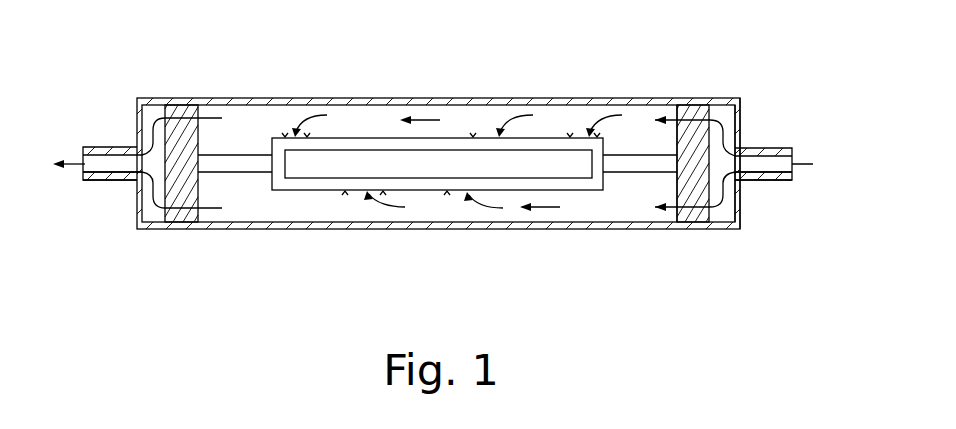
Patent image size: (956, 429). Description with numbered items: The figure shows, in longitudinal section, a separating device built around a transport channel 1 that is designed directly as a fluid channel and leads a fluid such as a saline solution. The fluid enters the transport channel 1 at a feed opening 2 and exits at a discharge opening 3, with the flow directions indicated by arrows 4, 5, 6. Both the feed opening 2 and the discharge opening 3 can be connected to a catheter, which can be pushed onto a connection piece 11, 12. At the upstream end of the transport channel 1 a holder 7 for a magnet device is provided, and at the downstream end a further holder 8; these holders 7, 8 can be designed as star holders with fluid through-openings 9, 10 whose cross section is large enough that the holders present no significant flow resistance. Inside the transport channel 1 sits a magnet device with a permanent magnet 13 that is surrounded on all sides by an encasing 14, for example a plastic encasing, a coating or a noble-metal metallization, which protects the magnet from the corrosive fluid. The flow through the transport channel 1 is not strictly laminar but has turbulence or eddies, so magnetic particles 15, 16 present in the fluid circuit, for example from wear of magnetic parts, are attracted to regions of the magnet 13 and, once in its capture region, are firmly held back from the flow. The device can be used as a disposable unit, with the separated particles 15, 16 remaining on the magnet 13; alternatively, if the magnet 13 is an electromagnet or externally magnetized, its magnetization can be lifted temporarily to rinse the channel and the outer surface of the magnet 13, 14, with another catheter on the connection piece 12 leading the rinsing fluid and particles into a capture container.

The transport channel 1 is at (597, 98).
The feed opening 2 is at (752, 173).
The discharge opening 3 is at (128, 157).
The arrow 4 is at (697, 221).
The arrow 5 is at (740, 100).
The arrow 6 is at (150, 198).
The holder 7 is at (687, 142).
The further holder 8 is at (201, 147).
The fluid through-opening 9 is at (695, 110).
The fluid through-opening 10 is at (176, 112).
The connection piece 11 is at (780, 146).
The connection piece 12 is at (100, 181).
The permanent magnet 13 is at (333, 156).
The encasing 14 is at (384, 137).
The magnetic particle 15 is at (450, 210).
The magnetic particle 16 is at (363, 192).